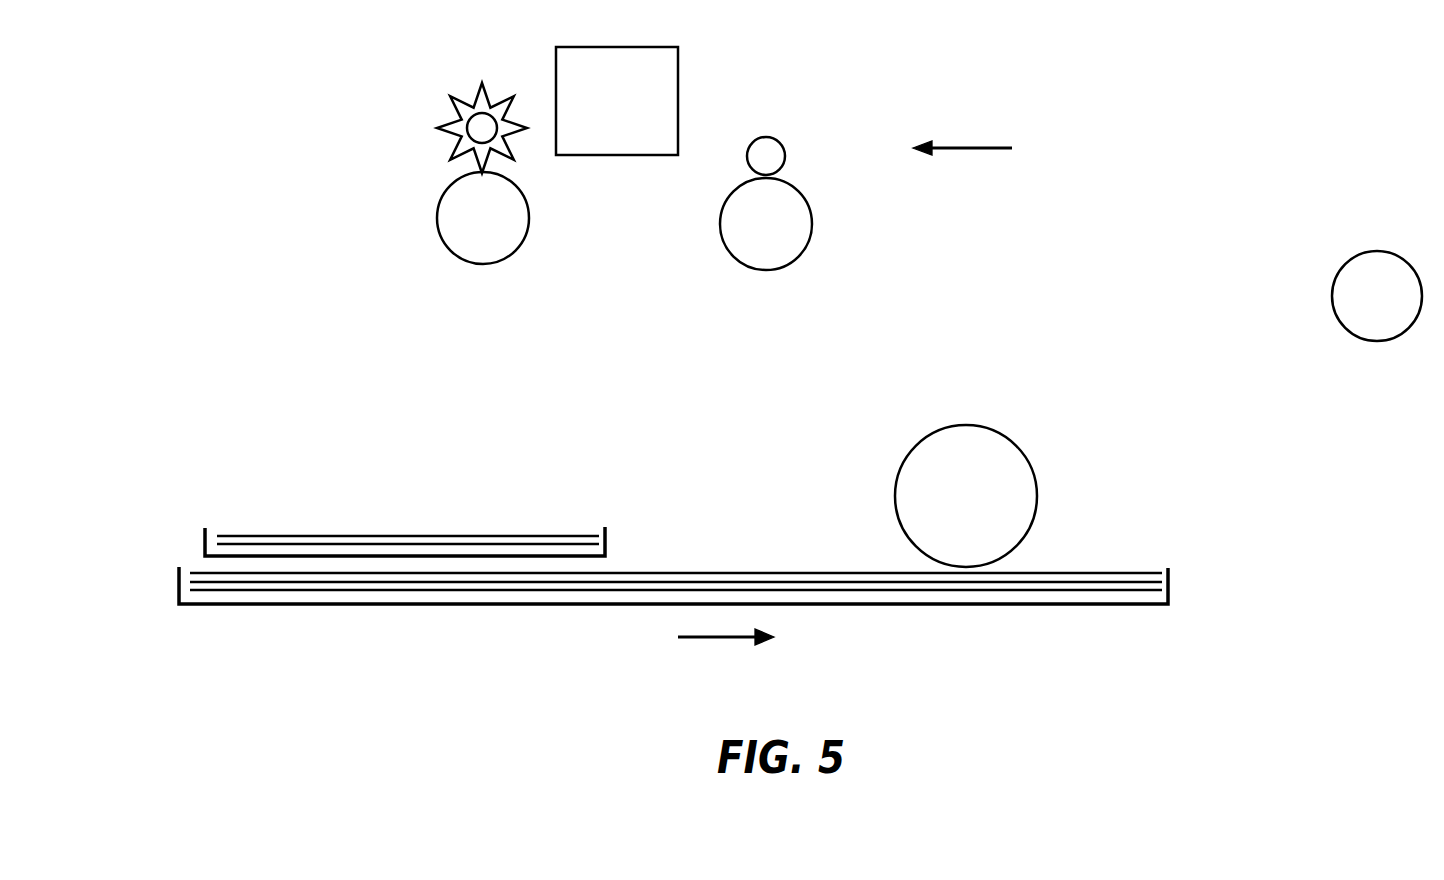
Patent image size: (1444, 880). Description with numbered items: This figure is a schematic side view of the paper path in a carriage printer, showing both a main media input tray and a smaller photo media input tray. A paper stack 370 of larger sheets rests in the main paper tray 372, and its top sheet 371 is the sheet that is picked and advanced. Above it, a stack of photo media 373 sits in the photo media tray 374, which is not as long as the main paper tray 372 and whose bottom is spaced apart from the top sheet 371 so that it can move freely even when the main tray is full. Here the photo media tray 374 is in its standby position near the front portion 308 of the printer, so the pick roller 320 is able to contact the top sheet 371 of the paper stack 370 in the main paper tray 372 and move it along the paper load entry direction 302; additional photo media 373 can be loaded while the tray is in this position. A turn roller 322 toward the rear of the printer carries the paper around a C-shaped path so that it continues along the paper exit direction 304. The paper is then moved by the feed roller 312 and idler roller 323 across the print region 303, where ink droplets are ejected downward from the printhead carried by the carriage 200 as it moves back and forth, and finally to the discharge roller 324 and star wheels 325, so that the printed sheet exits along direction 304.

The carriage 200 is at (613, 47).
The paper load entry direction 302 is at (718, 640).
The print region 303 is at (680, 165).
The paper exit direction 304 is at (967, 148).
The front portion 308 is at (162, 553).
The feed roller 312 is at (813, 232).
The pick roller 320 is at (910, 453).
The turn roller 322 is at (1330, 303).
The idler roller 323 is at (767, 138).
The discharge roller 324 is at (438, 228).
The star wheel 325 is at (478, 95).
The paper stack 370 is at (713, 568).
The top sheet 371 is at (1054, 573).
The main paper tray 372 is at (1171, 585).
The photo media stack 373 is at (475, 520).
The photo media tray 374 is at (443, 511).